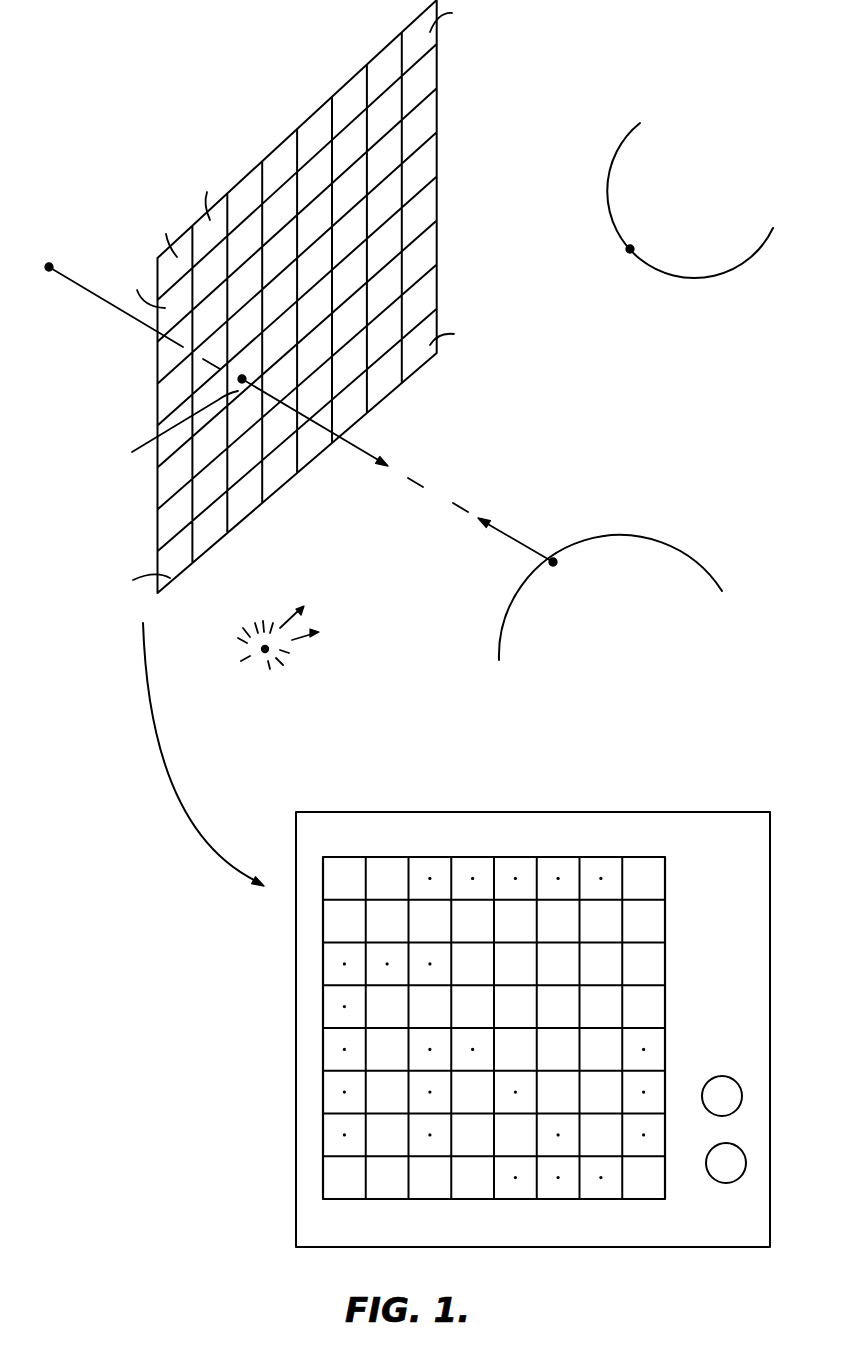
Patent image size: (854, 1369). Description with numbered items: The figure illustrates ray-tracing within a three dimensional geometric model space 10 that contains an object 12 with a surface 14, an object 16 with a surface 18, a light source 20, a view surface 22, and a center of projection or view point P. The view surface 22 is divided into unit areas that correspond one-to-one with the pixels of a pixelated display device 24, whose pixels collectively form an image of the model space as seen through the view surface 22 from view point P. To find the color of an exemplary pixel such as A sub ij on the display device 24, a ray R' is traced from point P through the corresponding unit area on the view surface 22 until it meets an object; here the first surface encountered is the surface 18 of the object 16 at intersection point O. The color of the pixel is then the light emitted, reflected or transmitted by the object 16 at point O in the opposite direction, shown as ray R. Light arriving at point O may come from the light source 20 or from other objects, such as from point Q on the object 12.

The three dimensional geometric model space 10 is at (797, 37).
The object 12 is at (690, 200).
The surface 14 is at (608, 196).
The object 16 is at (620, 597).
The surface 18 is at (700, 566).
The light source 20 is at (258, 666).
The view surface 22 is at (282, 143).
The pixelated display device 24 is at (683, 812).